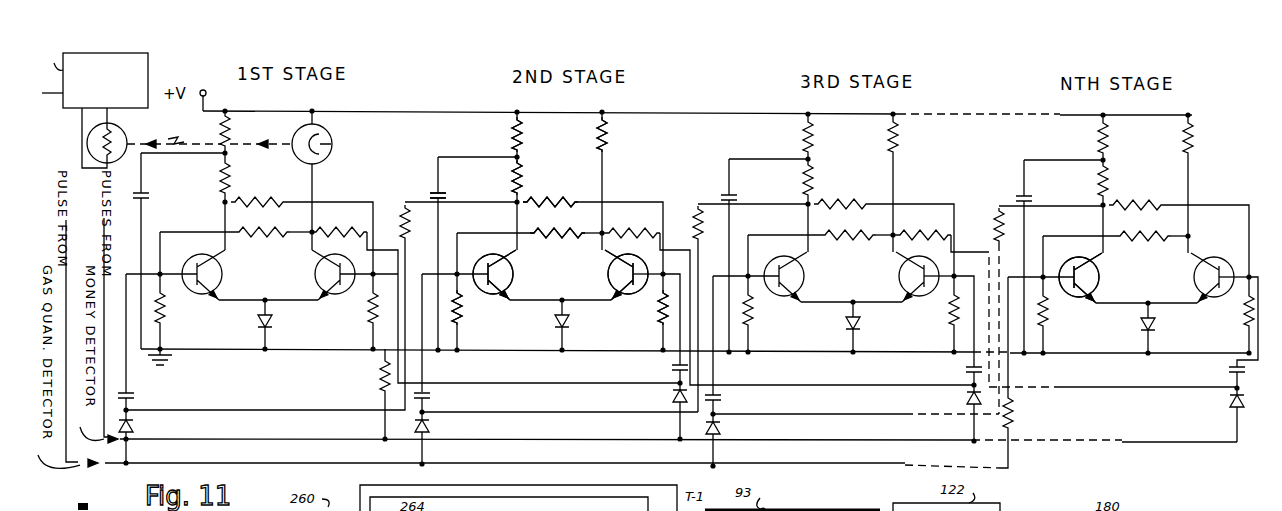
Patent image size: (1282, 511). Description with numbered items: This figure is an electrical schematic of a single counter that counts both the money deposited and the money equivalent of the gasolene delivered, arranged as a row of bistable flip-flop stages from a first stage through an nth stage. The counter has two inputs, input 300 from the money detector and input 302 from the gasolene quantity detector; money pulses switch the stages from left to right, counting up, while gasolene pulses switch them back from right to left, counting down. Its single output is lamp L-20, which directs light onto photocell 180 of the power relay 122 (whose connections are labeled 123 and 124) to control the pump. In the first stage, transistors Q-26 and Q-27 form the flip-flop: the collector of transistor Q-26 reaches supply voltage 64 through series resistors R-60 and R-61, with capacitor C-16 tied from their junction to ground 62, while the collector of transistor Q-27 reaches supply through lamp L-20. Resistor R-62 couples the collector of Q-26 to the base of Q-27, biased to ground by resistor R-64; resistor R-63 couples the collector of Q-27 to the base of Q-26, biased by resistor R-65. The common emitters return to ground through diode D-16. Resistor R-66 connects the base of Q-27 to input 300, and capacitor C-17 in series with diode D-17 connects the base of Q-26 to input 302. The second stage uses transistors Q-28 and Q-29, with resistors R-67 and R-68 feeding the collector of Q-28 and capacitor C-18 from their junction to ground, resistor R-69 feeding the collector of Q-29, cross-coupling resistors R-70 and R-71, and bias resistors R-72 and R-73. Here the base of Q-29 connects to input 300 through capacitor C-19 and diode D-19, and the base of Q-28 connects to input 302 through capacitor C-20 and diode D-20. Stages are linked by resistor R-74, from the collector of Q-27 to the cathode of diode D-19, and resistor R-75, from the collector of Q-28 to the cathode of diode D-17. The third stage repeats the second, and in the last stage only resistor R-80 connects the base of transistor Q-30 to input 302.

The power relay 122 is at (150, 70).
The relay lead 123 is at (45, 62).
The relay lead 124 is at (45, 102).
The photocell 180 is at (127, 134).
The supply voltage 64 is at (206, 93).
The ground 62 is at (172, 361).
The input from the money detector 300 is at (301, 441).
The input from the gasolene quantity detector 302 is at (312, 466).
The resistor R-60 is at (245, 134).
The resistor R-61 is at (245, 205).
The resistor R-62 is at (302, 225).
The resistor R-63 is at (236, 223).
The resistor R-64 is at (355, 311).
The resistor R-65 is at (180, 311).
The resistor R-66 is at (366, 394).
The resistor R-67 is at (537, 134).
The resistor R-68 is at (537, 177).
The resistor R-69 is at (623, 134).
The resistor R-70 is at (557, 192).
The resistor R-71 is at (752, 299).
The resistor R-72 is at (643, 308).
The resistor R-73 is at (475, 309).
The resistor R-74 is at (496, 296).
The resistor R-75 is at (321, 296).
The resistor R-80 is at (1027, 431).
The capacitor C-16 is at (179, 251).
The capacitor C-17 is at (147, 342).
The capacitor C-18 is at (453, 187).
The capacitor C-19 is at (656, 328).
The capacitor C-20 is at (442, 402).
The diode D-16 is at (284, 324).
The diode D-17 is at (148, 436).
The diode D-19 is at (656, 411).
The diode D-20 is at (443, 438).
The transistor Q-26 is at (193, 275).
The transistor Q-27 is at (339, 275).
The transistor Q-28 is at (512, 275).
The transistor Q-29 is at (610, 275).
The transistor Q-30 is at (1098, 278).
The lamp L-20 is at (328, 179).